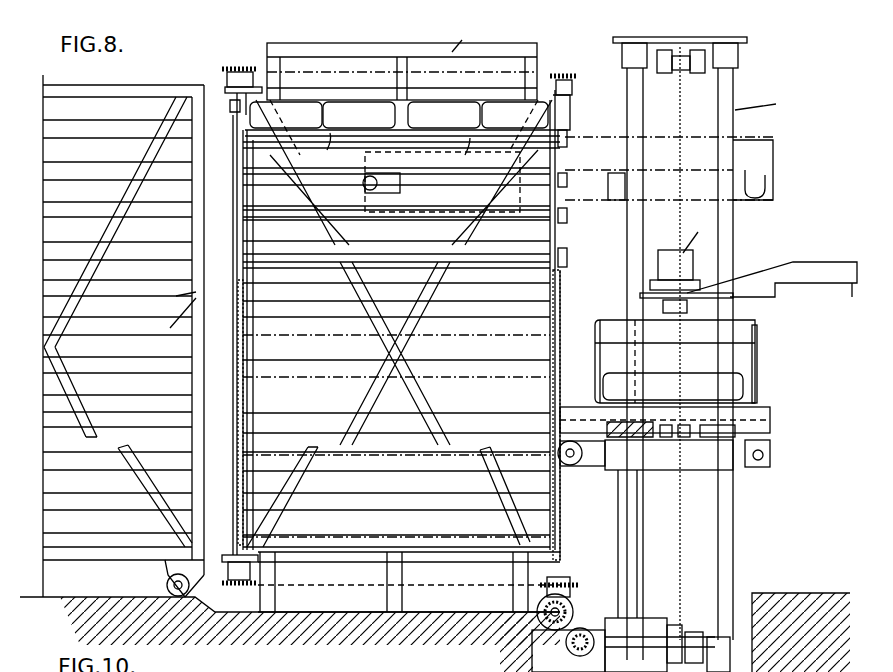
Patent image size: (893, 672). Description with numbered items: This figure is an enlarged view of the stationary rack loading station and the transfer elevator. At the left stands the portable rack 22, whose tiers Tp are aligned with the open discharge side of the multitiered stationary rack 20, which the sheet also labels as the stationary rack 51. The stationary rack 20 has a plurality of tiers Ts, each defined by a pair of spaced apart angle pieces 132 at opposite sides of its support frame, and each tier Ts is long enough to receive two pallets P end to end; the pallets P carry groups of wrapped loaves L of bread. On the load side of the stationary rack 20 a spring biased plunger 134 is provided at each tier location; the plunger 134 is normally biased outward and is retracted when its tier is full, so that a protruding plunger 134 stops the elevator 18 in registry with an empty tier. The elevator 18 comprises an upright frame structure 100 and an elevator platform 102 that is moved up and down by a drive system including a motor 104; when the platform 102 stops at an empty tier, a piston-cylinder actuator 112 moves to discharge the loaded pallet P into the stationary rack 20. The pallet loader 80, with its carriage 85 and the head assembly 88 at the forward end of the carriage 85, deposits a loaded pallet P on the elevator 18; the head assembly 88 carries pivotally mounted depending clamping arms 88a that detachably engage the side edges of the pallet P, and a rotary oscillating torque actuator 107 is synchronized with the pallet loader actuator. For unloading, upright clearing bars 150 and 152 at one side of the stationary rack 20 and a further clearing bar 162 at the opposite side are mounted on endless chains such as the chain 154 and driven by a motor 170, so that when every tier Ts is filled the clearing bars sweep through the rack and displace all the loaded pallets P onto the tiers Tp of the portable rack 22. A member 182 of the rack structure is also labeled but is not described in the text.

The portable rack 22 is at (142, 85).
The stationary rack 20 is at (270, 44).
The loaves L is at (352, 110).
The stationary rack 51 is at (476, 36).
The pallet P is at (397, 152).
The upright clearing bar 162 is at (236, 145).
The upright clearing bar 152 is at (238, 365).
The spring biased plunger 134 is at (567, 145).
The upright clearing bar 150 is at (560, 527).
The diagonal brace 182 is at (310, 252).
The angle pieces 132 is at (436, 506).
The endless chain 154 is at (356, 592).
The tiers of the portable rack Tp is at (194, 303).
The elevator 18 is at (743, 58).
The upright frame structure 100 is at (733, 242).
The tiers of the stationary rack Ts is at (542, 244).
The head assembly 88 is at (645, 285).
The rotary oscillating torque actuator 107 is at (699, 233).
The pallet loader 80 is at (823, 262).
The carriage 85 is at (852, 297).
The clamping arms 88a is at (598, 362).
The elevator platform 102 is at (772, 432).
The piston-cylinder actuator 112 is at (663, 462).
The motor 170 is at (568, 610).
The motor 104 is at (643, 620).